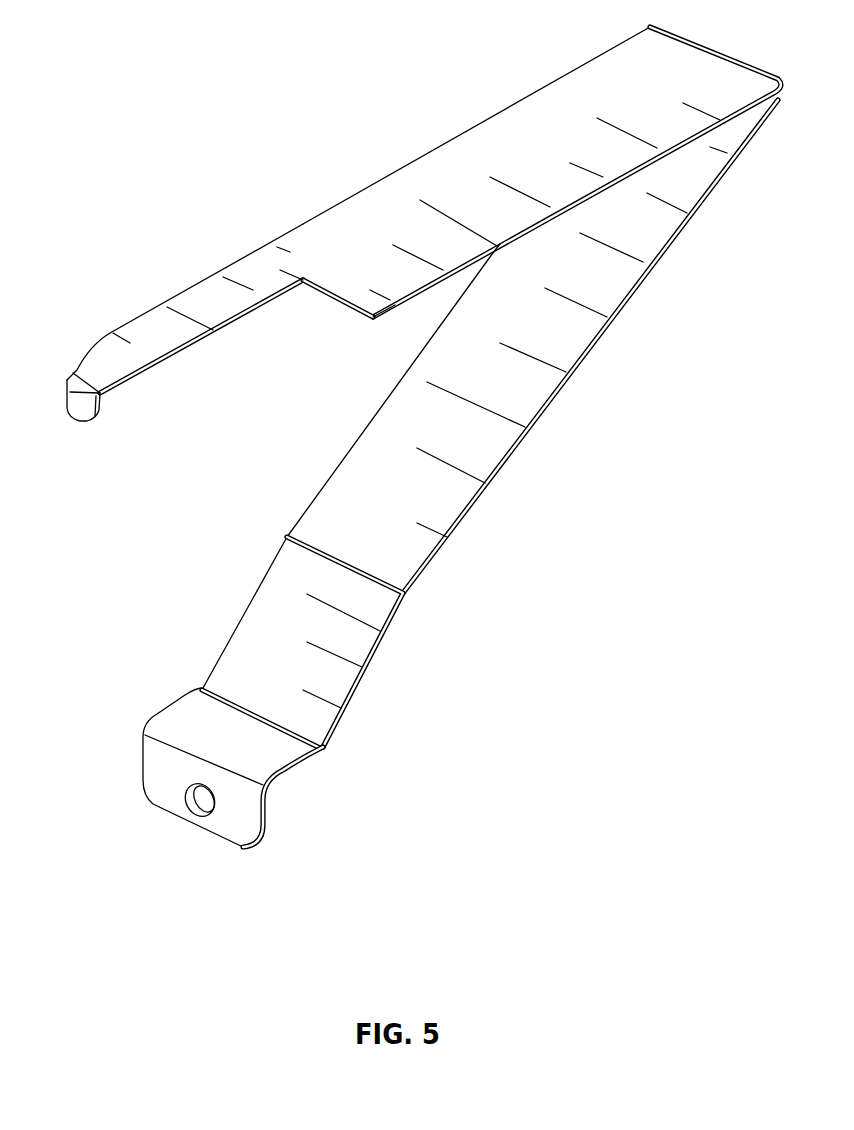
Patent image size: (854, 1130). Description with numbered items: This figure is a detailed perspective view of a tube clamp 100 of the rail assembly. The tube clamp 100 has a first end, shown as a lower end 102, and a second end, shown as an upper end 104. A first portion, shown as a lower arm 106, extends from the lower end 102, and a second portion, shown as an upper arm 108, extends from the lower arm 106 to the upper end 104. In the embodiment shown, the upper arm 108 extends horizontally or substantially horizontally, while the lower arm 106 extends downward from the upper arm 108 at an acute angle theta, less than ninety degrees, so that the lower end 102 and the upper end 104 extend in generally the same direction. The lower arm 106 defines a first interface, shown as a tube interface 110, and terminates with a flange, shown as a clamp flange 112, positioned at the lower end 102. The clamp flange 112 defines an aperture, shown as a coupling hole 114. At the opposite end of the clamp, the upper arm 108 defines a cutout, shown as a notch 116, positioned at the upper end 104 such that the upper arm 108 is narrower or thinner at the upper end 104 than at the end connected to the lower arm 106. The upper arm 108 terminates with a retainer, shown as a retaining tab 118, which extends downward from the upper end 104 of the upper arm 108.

The tube clamp 100 is at (125, 66).
The lower end 102 is at (197, 900).
The upper end 104 is at (55, 338).
The lower arm 106 is at (420, 357).
The upper arm 108 is at (445, 157).
The tube interface 110 is at (255, 625).
The clamp flange 112 is at (160, 785).
The coupling hole 114 is at (194, 806).
The notch 116 is at (270, 297).
The retaining tab 118 is at (88, 390).